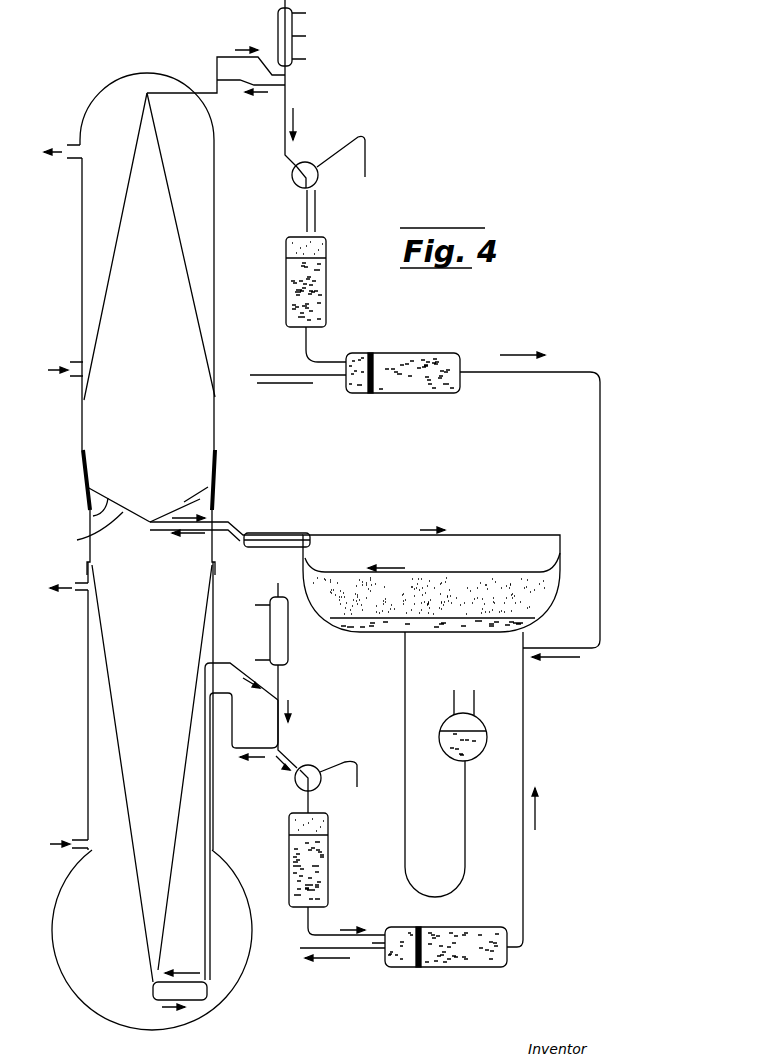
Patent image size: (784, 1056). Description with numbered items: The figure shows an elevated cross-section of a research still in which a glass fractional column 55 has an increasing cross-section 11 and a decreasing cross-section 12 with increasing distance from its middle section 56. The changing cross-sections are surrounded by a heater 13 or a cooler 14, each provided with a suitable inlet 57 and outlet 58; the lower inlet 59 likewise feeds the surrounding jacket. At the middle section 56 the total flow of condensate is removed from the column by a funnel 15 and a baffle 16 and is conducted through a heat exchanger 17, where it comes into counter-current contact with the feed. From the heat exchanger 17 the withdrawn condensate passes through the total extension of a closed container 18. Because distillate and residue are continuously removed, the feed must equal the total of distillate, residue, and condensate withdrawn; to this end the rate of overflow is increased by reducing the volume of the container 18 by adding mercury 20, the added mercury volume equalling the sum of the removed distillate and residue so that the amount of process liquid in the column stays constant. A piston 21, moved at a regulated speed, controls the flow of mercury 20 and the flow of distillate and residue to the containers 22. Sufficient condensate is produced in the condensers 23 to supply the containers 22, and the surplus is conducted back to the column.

The increasing cross-section 11 is at (112, 722).
The decreasing cross-section 12 is at (113, 258).
The heater 13 is at (88, 798).
The cooler 14 is at (82, 216).
The funnel 15 is at (78, 541).
The baffle 16 is at (93, 519).
The heat exchanger 17 is at (268, 531).
The closed container 18 is at (560, 575).
The mercury 20 is at (343, 633).
The piston 21 is at (388, 395).
The container 22 is at (326, 272).
The condenser 23 is at (309, 83).
The fractional column 55 is at (88, 652).
The middle section 56 is at (86, 492).
The inlet 57 is at (70, 362).
The outlet 58 is at (68, 145).
The inlet 59 is at (80, 840).